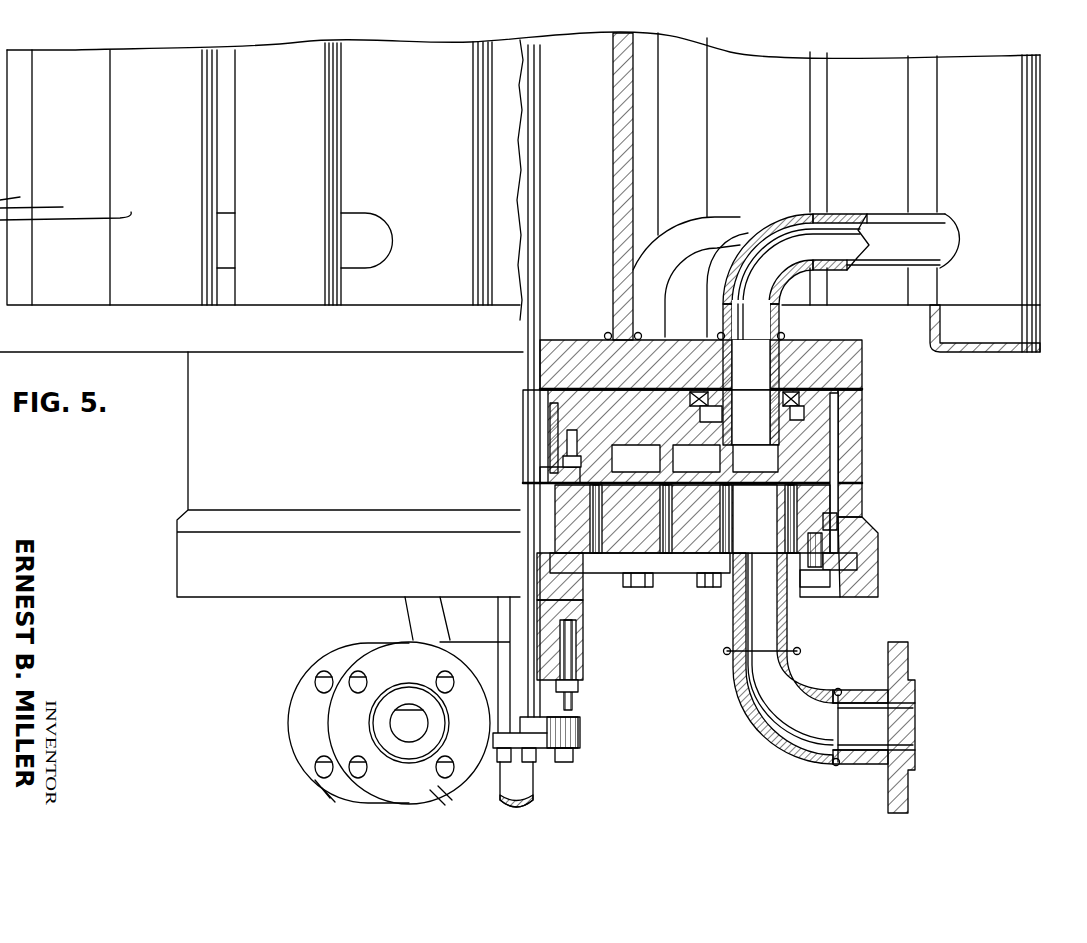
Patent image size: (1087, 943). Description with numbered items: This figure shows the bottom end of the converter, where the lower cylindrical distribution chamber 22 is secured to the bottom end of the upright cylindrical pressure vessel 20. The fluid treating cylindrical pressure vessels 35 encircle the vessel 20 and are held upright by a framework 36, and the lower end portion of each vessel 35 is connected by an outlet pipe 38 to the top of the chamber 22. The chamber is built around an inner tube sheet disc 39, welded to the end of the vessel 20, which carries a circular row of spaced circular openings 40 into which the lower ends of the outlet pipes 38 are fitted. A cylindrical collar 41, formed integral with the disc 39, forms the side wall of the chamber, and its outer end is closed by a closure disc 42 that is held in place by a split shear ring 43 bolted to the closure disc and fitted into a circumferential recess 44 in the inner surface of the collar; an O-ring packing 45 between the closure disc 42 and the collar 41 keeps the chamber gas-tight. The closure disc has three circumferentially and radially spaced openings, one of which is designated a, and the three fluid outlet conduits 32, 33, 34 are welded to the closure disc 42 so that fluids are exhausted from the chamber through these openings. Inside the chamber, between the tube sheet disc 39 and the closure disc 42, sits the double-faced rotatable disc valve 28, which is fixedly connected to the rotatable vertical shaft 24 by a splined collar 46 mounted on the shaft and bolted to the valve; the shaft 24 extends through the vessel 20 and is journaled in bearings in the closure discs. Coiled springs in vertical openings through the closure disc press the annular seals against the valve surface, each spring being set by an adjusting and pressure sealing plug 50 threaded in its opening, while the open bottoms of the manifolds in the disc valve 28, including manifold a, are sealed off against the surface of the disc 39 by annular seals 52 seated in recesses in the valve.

The upright cylindrical pressure vessel 20 is at (627, 181).
The lower cylindrical distribution chamber 22 is at (877, 437).
The rotatable vertical shaft 24 is at (537, 312).
The double-faced rotatable disc valve 28 is at (837, 420).
The fluid outlet conduit 32 is at (730, 635).
The fluid outlet conduit 33 is at (403, 615).
The fluid outlet conduit 34 is at (477, 630).
The fluid treating cylindrical pressure vessel 35 is at (907, 168).
The framework 36 is at (1015, 350).
The outlet pipe 38 is at (782, 222).
The inner tube sheet disc 39 is at (701, 365).
The circular opening 40 is at (720, 336).
The cylindrical collar 41 is at (863, 465).
The closure disc 42 is at (633, 533).
The split shear ring 43 is at (862, 547).
The circumferential recess 44 is at (847, 573).
The O-ring packing 45 is at (838, 520).
The splined collar 46 is at (553, 425).
The adjusting and pressure sealing plug 50 is at (710, 587).
The annular seal 52 is at (758, 412).
The inlet opening / annular channel a is at (745, 530).